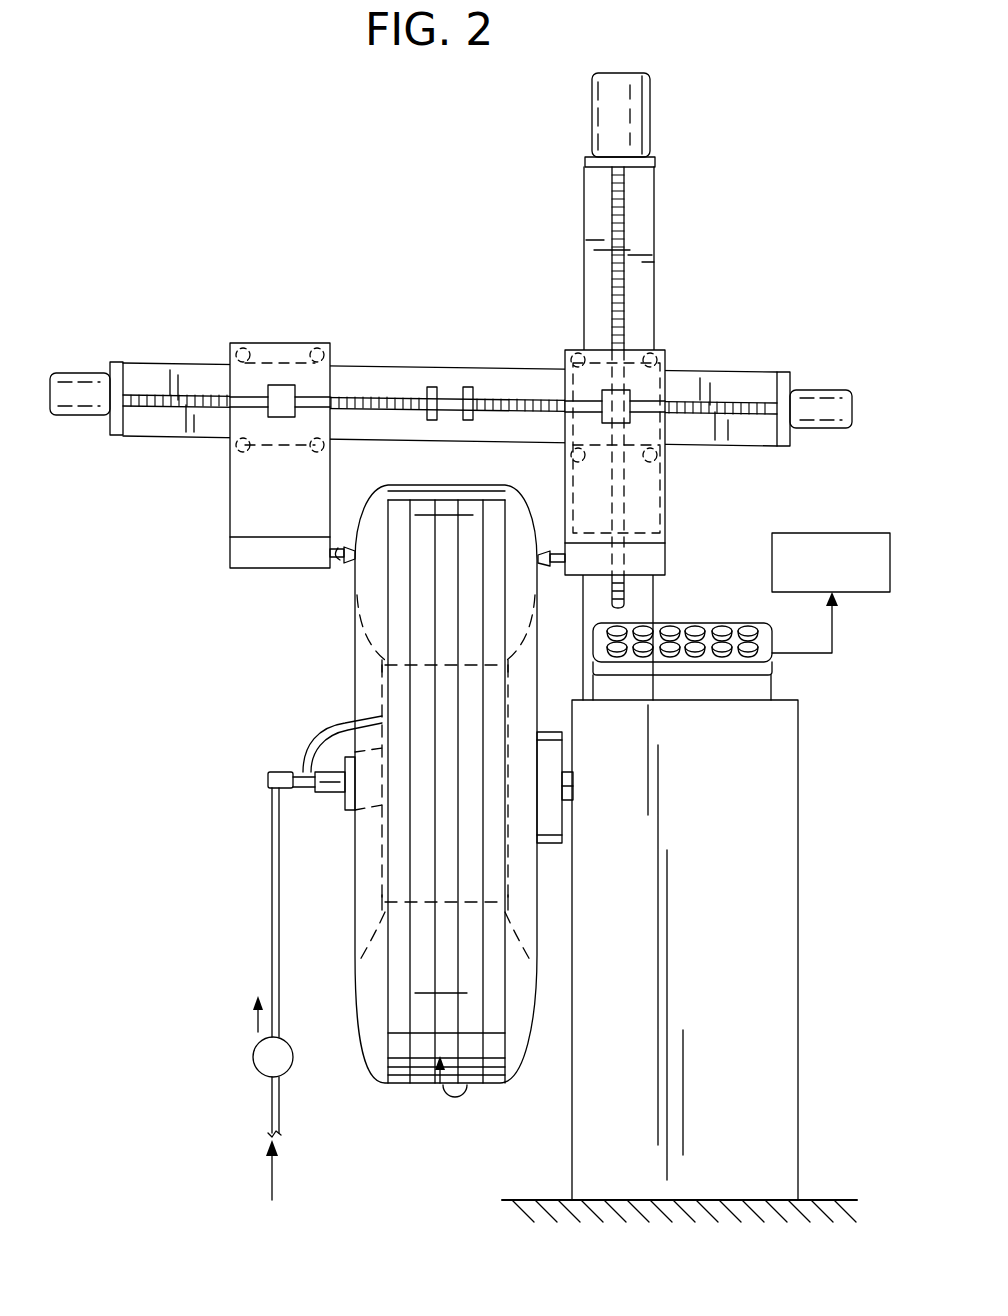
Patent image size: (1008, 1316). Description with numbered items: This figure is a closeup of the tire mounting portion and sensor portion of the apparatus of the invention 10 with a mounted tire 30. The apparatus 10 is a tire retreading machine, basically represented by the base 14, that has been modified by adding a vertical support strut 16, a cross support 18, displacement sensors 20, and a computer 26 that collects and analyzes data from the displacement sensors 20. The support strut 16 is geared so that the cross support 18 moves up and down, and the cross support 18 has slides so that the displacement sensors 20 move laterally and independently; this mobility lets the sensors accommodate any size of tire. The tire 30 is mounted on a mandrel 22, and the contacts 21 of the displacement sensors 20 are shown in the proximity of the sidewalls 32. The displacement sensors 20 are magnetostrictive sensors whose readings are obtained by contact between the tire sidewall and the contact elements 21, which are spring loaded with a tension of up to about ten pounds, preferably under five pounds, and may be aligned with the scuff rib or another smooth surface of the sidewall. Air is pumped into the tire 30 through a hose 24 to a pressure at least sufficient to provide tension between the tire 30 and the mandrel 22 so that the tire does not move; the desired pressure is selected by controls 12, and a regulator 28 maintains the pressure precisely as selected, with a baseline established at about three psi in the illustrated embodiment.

The apparatus of the invention 10 is at (707, 155).
The controls 12 is at (682, 622).
The base 14 is at (778, 1037).
The vertical support strut 16 is at (645, 297).
The cross support 18 is at (372, 373).
The displacement sensors 20 is at (260, 556).
The contact elements 21 is at (349, 560).
The mandrel 22 is at (388, 868).
The hose 24 is at (272, 890).
The computer 26 is at (822, 545).
The regulator 28 is at (258, 1063).
The tire 30 is at (352, 668).
The sidewalls 32 is at (352, 546).